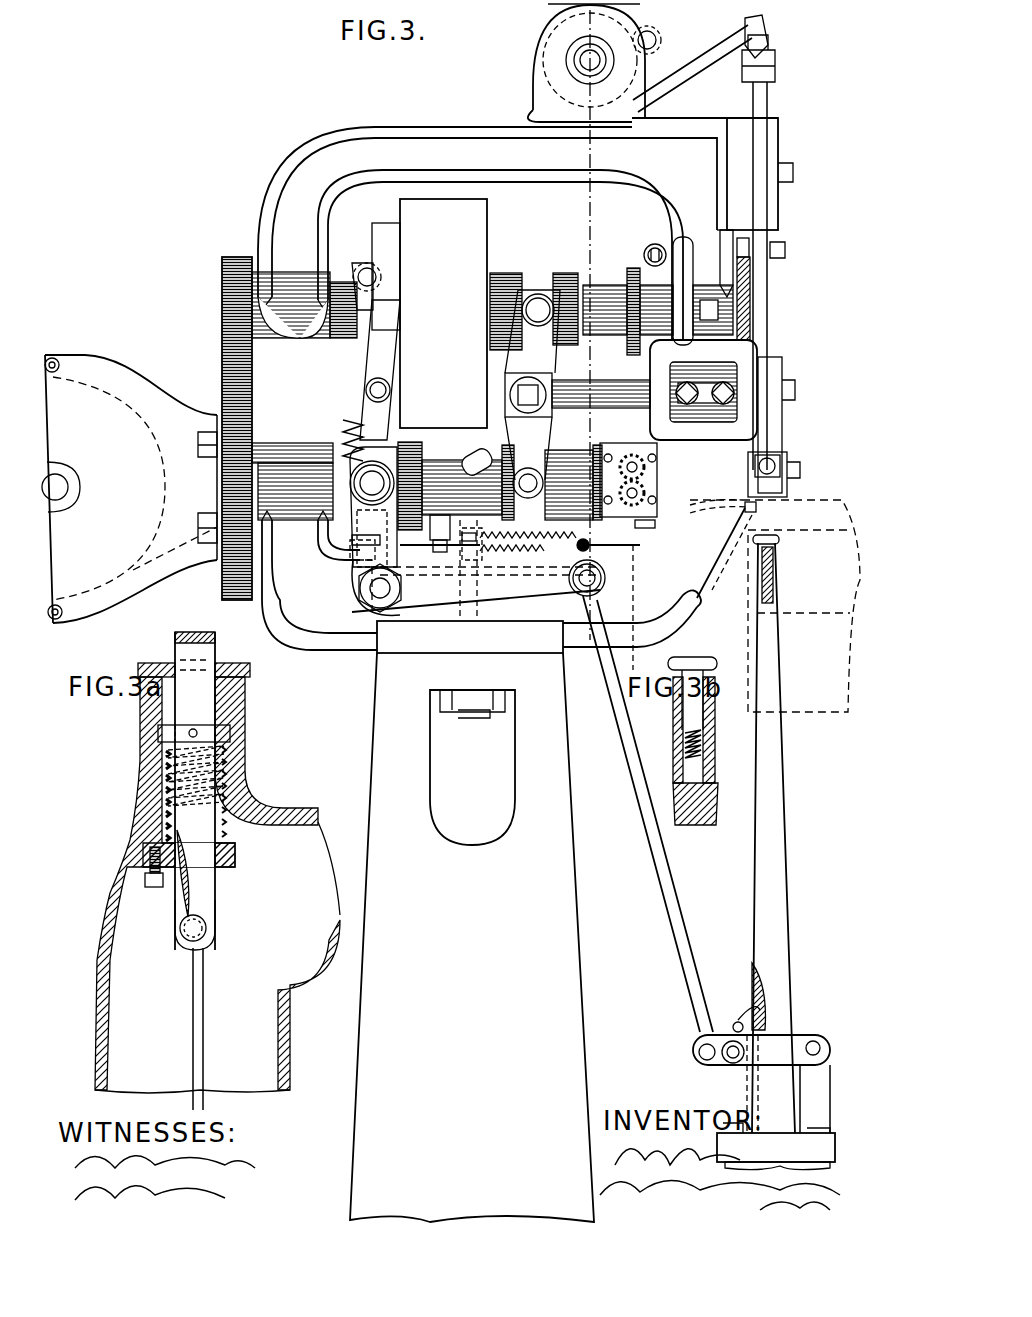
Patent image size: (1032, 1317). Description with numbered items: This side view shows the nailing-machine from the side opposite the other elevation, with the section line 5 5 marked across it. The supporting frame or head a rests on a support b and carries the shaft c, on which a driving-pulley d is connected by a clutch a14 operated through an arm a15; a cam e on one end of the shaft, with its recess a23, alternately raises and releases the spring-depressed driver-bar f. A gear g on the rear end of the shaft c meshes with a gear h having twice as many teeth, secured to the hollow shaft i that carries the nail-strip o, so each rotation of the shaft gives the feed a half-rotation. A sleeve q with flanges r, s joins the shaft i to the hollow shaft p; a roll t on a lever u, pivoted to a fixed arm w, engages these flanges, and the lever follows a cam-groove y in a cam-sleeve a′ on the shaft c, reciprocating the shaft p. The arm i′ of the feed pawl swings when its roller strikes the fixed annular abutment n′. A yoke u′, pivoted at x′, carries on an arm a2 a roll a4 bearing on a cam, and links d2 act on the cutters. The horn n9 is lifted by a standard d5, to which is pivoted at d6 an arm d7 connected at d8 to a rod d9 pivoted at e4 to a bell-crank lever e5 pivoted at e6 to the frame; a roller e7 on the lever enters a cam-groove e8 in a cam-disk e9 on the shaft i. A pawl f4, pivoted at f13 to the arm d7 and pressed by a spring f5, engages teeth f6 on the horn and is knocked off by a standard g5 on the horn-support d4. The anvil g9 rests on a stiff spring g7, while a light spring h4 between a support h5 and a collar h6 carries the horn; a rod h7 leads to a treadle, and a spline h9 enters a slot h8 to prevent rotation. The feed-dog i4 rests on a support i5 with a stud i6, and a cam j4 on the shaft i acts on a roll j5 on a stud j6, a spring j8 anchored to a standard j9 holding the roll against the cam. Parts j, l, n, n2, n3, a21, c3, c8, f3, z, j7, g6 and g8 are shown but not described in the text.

In FIG. 3, the section line 5 is at (560, 8).
In FIG. 3, the supporting frame or head a is at (372, 625).
In FIG. 3, the support b is at (472, 937).
In FIG. 3, the shaft c is at (583, 280).
In FIG. 3, the driving-pulley d is at (470, 245).
In FIG. 3, the gear g is at (220, 308).
In FIG. 3, the gear h is at (217, 390).
In FIG. 3, the bracket j is at (131, 489).
In FIG. 3, the shaft l is at (217, 480).
In FIG. 3, the bearing n is at (58, 485).
In FIG. 3, the nail-strip o is at (155, 557).
In FIG. 3, the hub n2 is at (530, 55).
In FIG. 3, the rod n3 is at (698, 40).
In FIG. 3, the work-supporting horn n9 is at (780, 790).
In FIG. 3A, the work-supporting horn n9 is at (205, 700).
In FIG. 3, the clutch a14 is at (365, 268).
In FIG. 3, the arm a15 is at (385, 358).
In FIG. 3, the cam-sleeve a′ is at (503, 272).
In FIG. 3, the arm a2 is at (685, 265).
In FIG. 3, the roll a4 is at (690, 300).
In FIG. 3, the slide a21 is at (735, 235).
In FIG. 3, the recess a23 is at (745, 250).
In FIG. 3, the cam-groove y is at (576, 251).
In FIG. 3, the bearing c3 is at (655, 243).
In FIG. 3, the bearing block c8 is at (755, 465).
In FIG. 3, the cam e is at (755, 275).
In FIG. 3, the driver-bar f is at (770, 288).
In FIG. 3, the lever (dotted) f3 is at (815, 498).
In FIG. 3, the yoke u′ is at (712, 350).
In FIG. 3, the pivot x′ is at (760, 378).
In FIG. 3, the flange r is at (540, 395).
In FIG. 3, the fixed arm w is at (588, 385).
In FIG. 3, the spring h4 is at (625, 378).
In FIG. 3A, the spring h4 is at (228, 805).
In FIG. 3, the screw z is at (705, 425).
In FIG. 3, the pivot e4 is at (602, 583).
In FIG. 3, the bell-crank lever e5 is at (476, 586).
In FIG. 3, the pivot e6 is at (372, 590).
In FIG. 3, the roller e7 is at (420, 465).
In FIG. 3, the cam-groove e8 is at (372, 465).
In FIG. 3, the cam-disk e9 is at (395, 475).
In FIG. 3, the shaft i is at (430, 475).
In FIG. 3, the arm i′ is at (665, 520).
In FIG. 3, the feed-dog i4 is at (625, 505).
In FIG. 3, the support i5 is at (355, 582).
In FIG. 3, the stud i6 is at (350, 543).
In FIG. 3, the cam j4 is at (418, 500).
In FIG. 3, the roll j5 is at (470, 500).
In FIG. 3, the stud j6 is at (440, 520).
In FIG. 3, the cam j7 is at (478, 460).
In FIG. 3, the spring j8 is at (580, 500).
In FIG. 3, the standard j9 is at (505, 505).
In FIG. 3, the sleeve q is at (490, 490).
In FIG. 3, the roll t is at (528, 500).
In FIG. 3, the lever u is at (540, 442).
In FIG. 3, the flange s is at (565, 441).
In FIG. 3, the hollow shaft p is at (588, 460).
In FIG. 3, the fixed annular abutment n′ is at (660, 527).
In FIG. 3, the link d2 is at (785, 465).
In FIG. 3, the horn-support d4 is at (825, 1148).
In FIG. 3A, the horn-support d4 is at (138, 805).
In FIG. 3, the standard d5 is at (818, 1086).
In FIG. 3, the pivot d6 is at (820, 1048).
In FIG. 3, the arm d7 is at (775, 1048).
In FIG. 3, the connection d8 is at (705, 1052).
In FIG. 3, the rod d9 is at (668, 888).
In FIG. 3, the pawl f4 is at (753, 1005).
In FIG. 3, the spring f5 is at (738, 1027).
In FIG. 3, the teeth f6 is at (752, 963).
In FIG. 3, the pivot f13 is at (730, 1058).
In FIG. 3, the standard g5 is at (750, 1075).
In FIG. 3, the spring g6 is at (758, 595).
In FIG. 3B, the spring g6 is at (705, 755).
In FIG. 3, the spring g7 is at (775, 582).
In FIG. 3B, the spring g7 is at (677, 752).
In FIG. 3, the stem g8 is at (777, 558).
In FIG. 3B, the stem g8 is at (714, 694).
In FIG. 3, the tip or anvil g9 is at (772, 535).
In FIG. 3B, the tip or anvil g9 is at (695, 662).
In FIG. 3A, the support h5 is at (233, 866).
In FIG. 3A, the collar h6 is at (163, 735).
In FIG. 3A, the rod h7 is at (205, 978).
In FIG. 3A, the slot h8 is at (182, 920).
In FIG. 3A, the spline h9 is at (160, 888).